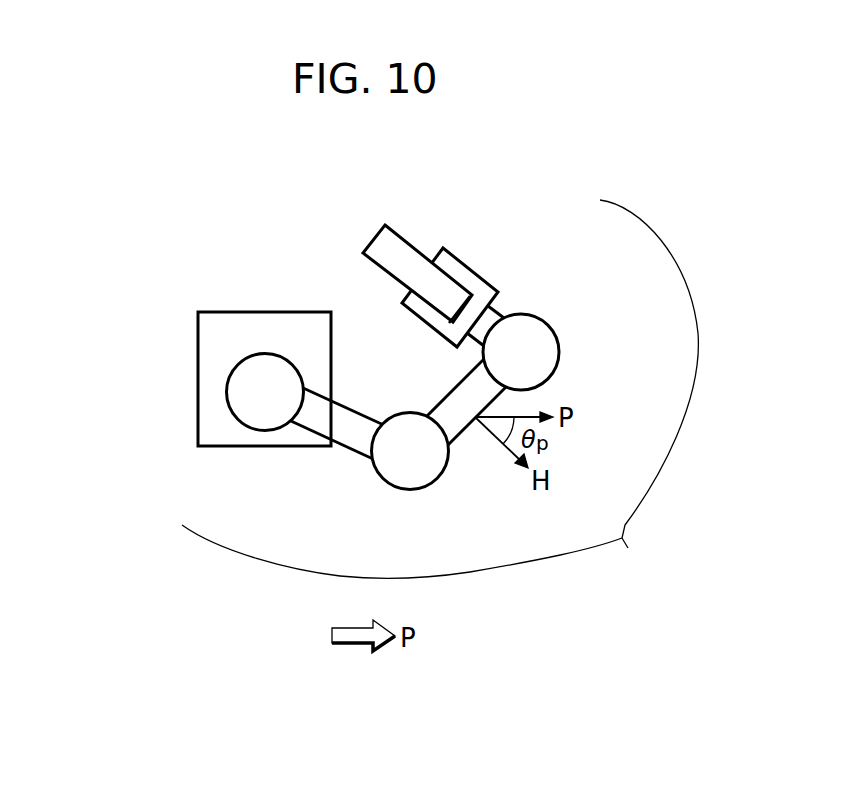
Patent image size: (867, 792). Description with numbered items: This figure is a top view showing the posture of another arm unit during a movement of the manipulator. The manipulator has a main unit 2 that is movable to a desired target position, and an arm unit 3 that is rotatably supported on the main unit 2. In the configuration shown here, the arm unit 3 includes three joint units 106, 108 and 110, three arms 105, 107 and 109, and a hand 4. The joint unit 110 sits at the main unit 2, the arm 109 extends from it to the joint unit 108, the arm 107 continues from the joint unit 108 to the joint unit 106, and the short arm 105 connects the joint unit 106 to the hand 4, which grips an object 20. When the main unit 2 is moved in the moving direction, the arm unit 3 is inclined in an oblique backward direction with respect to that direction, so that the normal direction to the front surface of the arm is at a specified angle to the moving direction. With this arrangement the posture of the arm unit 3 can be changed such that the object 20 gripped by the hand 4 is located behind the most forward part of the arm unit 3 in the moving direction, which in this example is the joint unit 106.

The main unit 2 is at (198, 420).
The arm unit 3 is at (440, 389).
The hand 4 is at (472, 268).
The object 20 is at (407, 240).
The arm 105 is at (500, 310).
The joint unit 106 is at (554, 334).
The arm 107 is at (460, 433).
The joint unit 108 is at (407, 490).
The arm 109 is at (348, 452).
The joint unit 110 is at (250, 432).